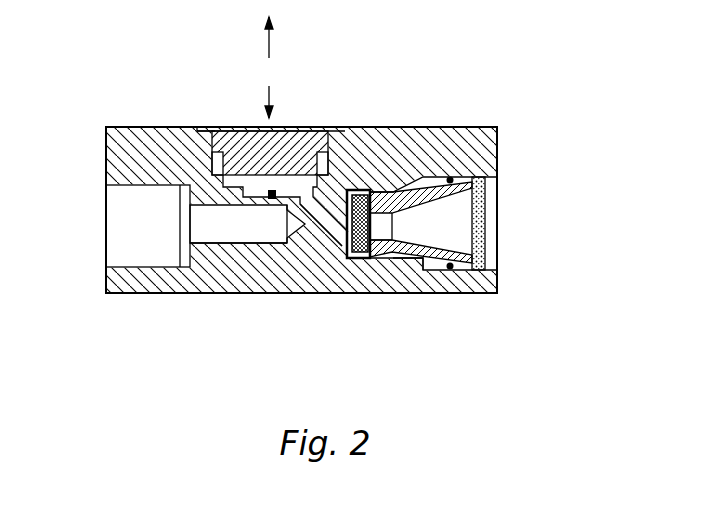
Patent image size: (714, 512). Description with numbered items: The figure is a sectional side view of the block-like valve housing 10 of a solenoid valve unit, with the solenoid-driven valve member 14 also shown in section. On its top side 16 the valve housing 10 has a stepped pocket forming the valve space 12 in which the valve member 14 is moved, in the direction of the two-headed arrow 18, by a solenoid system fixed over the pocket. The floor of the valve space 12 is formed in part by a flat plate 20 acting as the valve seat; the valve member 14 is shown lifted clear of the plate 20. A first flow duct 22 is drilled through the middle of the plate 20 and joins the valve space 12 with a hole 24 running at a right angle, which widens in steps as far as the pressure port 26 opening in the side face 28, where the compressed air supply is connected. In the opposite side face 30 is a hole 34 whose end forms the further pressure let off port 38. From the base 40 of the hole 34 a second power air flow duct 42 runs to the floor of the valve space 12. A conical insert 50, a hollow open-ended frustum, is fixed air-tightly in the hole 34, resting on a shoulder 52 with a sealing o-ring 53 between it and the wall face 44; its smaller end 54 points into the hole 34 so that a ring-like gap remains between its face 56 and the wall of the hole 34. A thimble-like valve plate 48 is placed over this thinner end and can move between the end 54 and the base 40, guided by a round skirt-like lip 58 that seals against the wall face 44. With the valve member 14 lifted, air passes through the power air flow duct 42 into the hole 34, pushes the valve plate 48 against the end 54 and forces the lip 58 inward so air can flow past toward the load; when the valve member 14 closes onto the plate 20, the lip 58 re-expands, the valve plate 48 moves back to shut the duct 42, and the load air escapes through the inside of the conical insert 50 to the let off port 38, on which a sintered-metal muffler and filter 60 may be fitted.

The valve housing 10 is at (505, 103).
The valve space 12 is at (322, 147).
The valve member 14 is at (242, 132).
The top side 16 is at (397, 125).
The two-headed arrow 18 is at (272, 67).
The plate 20 is at (200, 128).
The first flow duct 22 is at (257, 228).
The hole 24 is at (205, 240).
The pressure port 26 is at (100, 238).
The side face 28 is at (100, 150).
The side face 30 is at (497, 143).
The hole 34 is at (490, 226).
The further pressure let off port 38 is at (503, 193).
The base 40 is at (336, 243).
The second power air flow duct 42 is at (332, 207).
The wall face 44 is at (414, 283).
The valve plate 48 is at (353, 250).
The conical insert 50 is at (445, 272).
The shoulder 52 is at (440, 176).
The sealing o-ring 53 is at (480, 294).
The end 54 is at (418, 176).
The face 56 is at (397, 266).
The lip 58 is at (373, 253).
The muffler and filter 60 is at (497, 262).